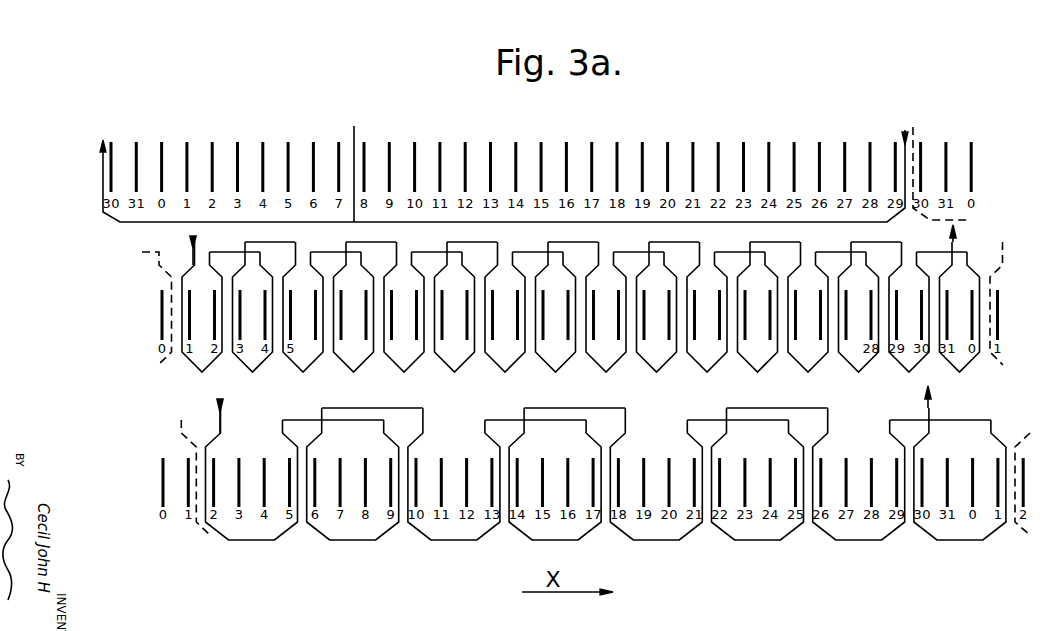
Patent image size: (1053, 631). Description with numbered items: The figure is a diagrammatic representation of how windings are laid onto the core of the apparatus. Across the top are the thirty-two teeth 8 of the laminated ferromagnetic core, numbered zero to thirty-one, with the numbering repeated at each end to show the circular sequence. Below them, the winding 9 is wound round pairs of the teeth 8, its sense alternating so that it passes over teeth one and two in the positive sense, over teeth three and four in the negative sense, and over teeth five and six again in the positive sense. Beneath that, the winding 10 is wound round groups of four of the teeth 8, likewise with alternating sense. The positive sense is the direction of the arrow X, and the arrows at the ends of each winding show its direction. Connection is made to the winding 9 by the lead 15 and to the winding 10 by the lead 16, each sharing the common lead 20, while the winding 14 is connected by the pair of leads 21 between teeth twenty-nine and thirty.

The teeth 8 is at (189, 143).
The winding 9 is at (568, 360).
The winding 10 is at (763, 541).
The winding 14 is at (351, 160).
The lead 15 is at (953, 236).
The lead 16 is at (928, 398).
The common lead 20 is at (190, 236).
The pair of leads 21 is at (524, 160).